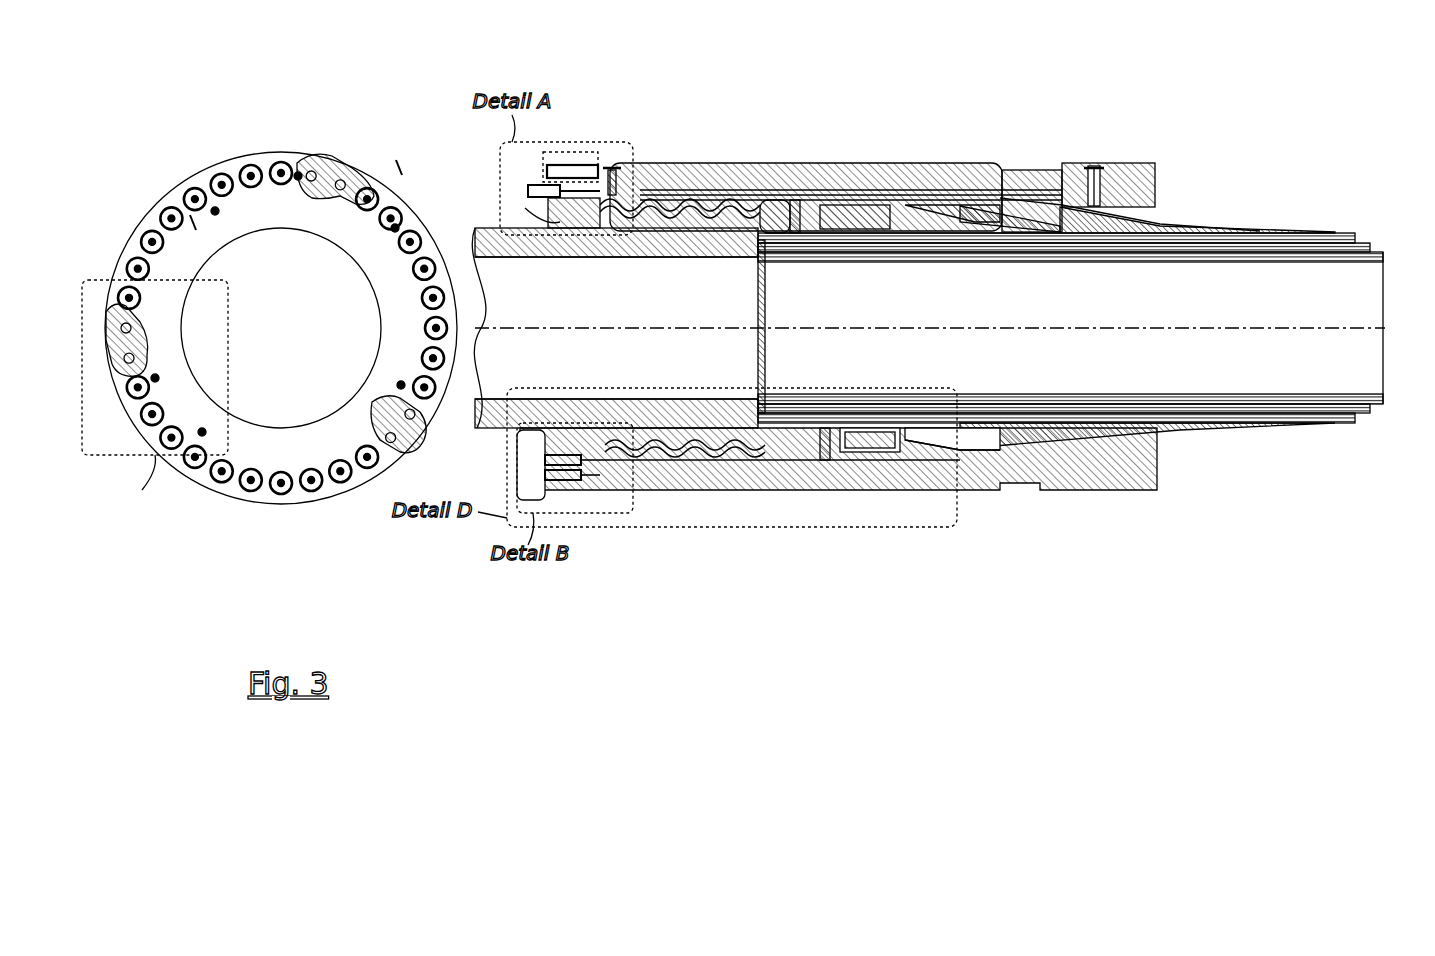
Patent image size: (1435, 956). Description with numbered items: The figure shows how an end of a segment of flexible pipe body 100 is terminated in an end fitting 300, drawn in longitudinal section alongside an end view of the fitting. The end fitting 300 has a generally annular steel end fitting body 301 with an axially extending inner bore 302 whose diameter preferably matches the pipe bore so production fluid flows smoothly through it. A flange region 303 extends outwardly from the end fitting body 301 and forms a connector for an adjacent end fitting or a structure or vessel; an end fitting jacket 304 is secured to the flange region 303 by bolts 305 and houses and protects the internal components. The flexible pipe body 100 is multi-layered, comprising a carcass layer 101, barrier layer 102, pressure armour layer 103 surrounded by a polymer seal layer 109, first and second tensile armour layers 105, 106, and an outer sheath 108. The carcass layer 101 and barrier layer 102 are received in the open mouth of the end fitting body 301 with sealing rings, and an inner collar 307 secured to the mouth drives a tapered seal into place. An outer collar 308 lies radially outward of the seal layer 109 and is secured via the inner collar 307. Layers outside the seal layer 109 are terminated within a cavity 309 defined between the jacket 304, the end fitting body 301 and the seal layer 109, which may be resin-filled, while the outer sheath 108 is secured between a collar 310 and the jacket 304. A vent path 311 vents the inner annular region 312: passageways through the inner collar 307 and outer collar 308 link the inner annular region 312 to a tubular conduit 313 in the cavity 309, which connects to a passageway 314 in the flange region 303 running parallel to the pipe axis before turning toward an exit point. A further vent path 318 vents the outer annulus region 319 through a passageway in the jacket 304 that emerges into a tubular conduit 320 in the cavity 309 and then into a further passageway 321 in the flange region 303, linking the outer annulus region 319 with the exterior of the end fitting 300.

The flexible pipe body 100 is at (1312, 162).
The carcass layer 101 is at (1245, 262).
The barrier layer 102 is at (1323, 262).
The pressure armour layer 103 is at (1340, 236).
The first tensile armour layer 105 is at (915, 198).
The second tensile armour layer 106 is at (965, 200).
The outer sheath 108 is at (1163, 210).
The seal layer 109 is at (972, 236).
The end fitting 300 is at (753, 90).
The end fitting body 301 is at (742, 210).
The inner bore 302 is at (733, 333).
The flange region 303 is at (555, 216).
The end fitting jacket 304 is at (858, 180).
The bolts 305 is at (580, 165).
The inner collar 307 is at (832, 462).
The outer collar 308 is at (870, 458).
The cavity 309 is at (938, 462).
The collar 310 is at (1102, 178).
The vent path 311 is at (665, 458).
The inner annular region 312 is at (1328, 432).
The tubular conduit 313 is at (720, 462).
The passageway 314 is at (590, 478).
The vent path 318 is at (1045, 176).
The outer annulus region 319 is at (1248, 226).
The tubular conduit 320 is at (668, 188).
The passageway 321 is at (530, 188).